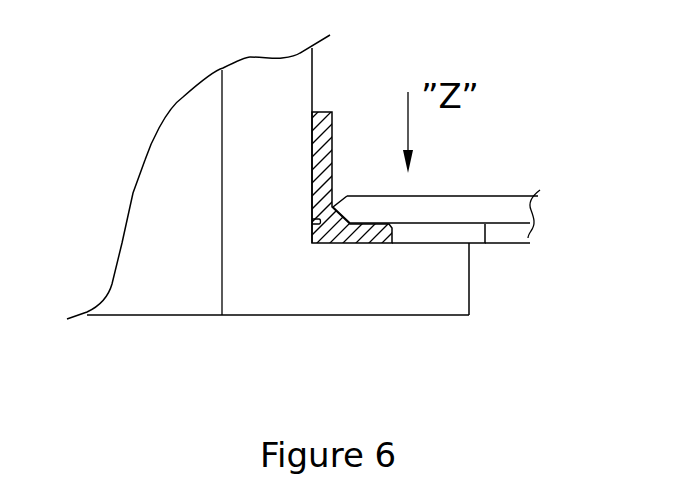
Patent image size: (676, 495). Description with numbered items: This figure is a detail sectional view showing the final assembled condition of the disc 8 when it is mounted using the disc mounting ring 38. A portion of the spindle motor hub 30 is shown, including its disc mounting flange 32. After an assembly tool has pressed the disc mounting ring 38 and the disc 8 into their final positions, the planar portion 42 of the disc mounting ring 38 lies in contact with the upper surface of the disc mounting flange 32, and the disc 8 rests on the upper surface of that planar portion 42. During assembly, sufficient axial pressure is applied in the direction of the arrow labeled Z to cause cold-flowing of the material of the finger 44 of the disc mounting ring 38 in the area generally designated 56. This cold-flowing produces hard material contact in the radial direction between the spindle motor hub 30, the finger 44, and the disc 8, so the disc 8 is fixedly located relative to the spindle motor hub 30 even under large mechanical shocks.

The spindle motor hub 30 is at (250, 163).
The finger 44 is at (330, 132).
The disc 8 is at (440, 197).
The planar portion 42 is at (462, 237).
The disc mounting ring 38 is at (485, 245).
The disc mounting flange 32 is at (395, 293).
The area of cold-flowing 56 is at (305, 270).